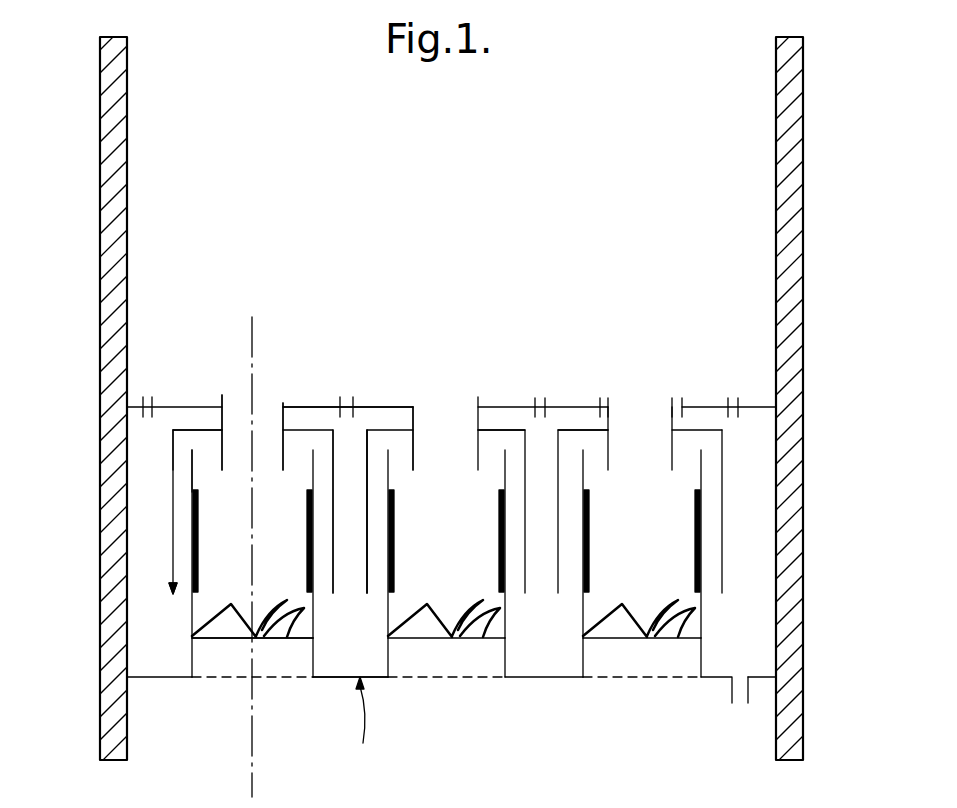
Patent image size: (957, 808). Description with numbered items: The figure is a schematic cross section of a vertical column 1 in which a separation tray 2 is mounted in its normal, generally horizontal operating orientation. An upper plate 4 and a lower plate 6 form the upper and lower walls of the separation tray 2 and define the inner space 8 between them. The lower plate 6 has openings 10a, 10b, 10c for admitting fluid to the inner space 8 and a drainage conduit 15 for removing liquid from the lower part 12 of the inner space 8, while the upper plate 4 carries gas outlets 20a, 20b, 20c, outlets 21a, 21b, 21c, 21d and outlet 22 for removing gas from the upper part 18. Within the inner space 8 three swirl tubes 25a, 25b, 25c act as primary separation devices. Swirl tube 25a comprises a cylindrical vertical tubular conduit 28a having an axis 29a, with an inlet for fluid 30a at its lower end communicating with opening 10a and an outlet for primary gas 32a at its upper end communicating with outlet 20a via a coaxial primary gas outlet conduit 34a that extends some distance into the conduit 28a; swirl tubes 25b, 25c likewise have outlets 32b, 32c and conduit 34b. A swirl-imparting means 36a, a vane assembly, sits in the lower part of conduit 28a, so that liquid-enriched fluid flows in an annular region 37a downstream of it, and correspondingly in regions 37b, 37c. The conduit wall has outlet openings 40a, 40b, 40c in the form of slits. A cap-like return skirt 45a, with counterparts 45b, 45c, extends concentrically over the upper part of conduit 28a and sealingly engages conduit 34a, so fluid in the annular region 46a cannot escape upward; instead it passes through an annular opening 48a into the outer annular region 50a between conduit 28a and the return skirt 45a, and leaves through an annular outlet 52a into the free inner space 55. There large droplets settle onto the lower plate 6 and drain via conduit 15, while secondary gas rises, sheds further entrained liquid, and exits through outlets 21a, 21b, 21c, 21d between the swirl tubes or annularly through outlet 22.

The column 1 is at (803, 303).
The separation tray 2 is at (358, 724).
The upper plate 4 is at (402, 407).
The lower plate 6 is at (380, 680).
The inner space 8 is at (540, 660).
The opening 10a is at (217, 678).
The opening 10b is at (475, 678).
The opening 10c is at (638, 678).
The lower part of the inner space 12 is at (740, 658).
The drainage conduit 15 is at (728, 693).
The upper part of the inner space 18 is at (540, 450).
The outlet 20a is at (258, 405).
The outlet 20b is at (462, 410).
The outlet 20c is at (635, 410).
The outlet 21a is at (152, 399).
The outlet 21b is at (343, 408).
The outlet 21c is at (538, 404).
The outlet 21d is at (738, 402).
The outlet 22 is at (608, 407).
The swirl tube 25a is at (186, 665).
The swirl tube 25b is at (388, 655).
The swirl tube 25c is at (578, 665).
The tubular conduit 28a is at (190, 617).
The axis 29a is at (254, 323).
The inlet for fluid 30a is at (262, 658).
The outlet for primary gas 32a is at (240, 437).
The outlet for primary gas 32b is at (445, 457).
The outlet for primary gas 32c is at (630, 457).
The primary gas outlet conduit 34a is at (287, 416).
The primary gas outlet conduit 34b is at (415, 453).
The swirl-imparting means 36a is at (192, 640).
The annular region 37a is at (230, 583).
The annular region 37b is at (398, 600).
The annular region 37c is at (605, 590).
The outlet openings 40a is at (200, 537).
The outlet openings 40b is at (501, 543).
The outlet openings 40c is at (590, 522).
The return skirt 45a is at (173, 525).
The return skirt 45b is at (363, 572).
The return skirt 45c is at (722, 540).
The annular region 46a is at (205, 466).
The annular opening 48a is at (185, 442).
The outer annular region 50a is at (185, 494).
The annular outlet 52a is at (182, 593).
The free inner space 55 is at (335, 643).